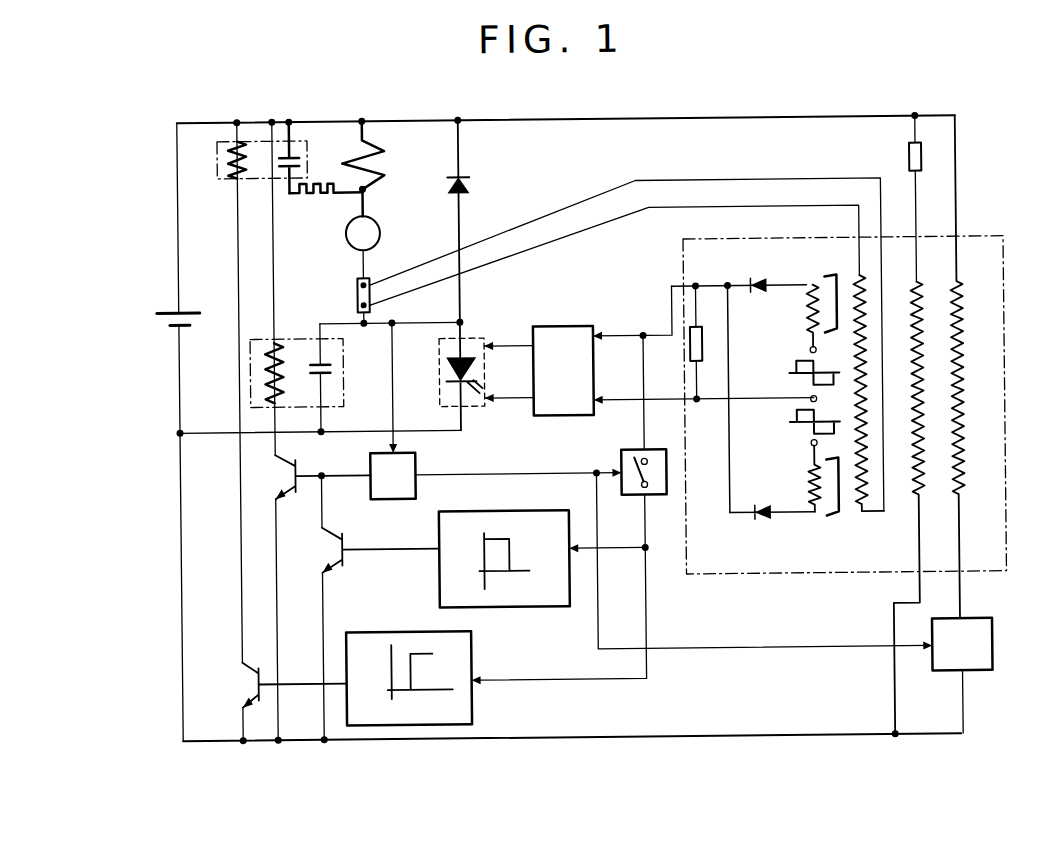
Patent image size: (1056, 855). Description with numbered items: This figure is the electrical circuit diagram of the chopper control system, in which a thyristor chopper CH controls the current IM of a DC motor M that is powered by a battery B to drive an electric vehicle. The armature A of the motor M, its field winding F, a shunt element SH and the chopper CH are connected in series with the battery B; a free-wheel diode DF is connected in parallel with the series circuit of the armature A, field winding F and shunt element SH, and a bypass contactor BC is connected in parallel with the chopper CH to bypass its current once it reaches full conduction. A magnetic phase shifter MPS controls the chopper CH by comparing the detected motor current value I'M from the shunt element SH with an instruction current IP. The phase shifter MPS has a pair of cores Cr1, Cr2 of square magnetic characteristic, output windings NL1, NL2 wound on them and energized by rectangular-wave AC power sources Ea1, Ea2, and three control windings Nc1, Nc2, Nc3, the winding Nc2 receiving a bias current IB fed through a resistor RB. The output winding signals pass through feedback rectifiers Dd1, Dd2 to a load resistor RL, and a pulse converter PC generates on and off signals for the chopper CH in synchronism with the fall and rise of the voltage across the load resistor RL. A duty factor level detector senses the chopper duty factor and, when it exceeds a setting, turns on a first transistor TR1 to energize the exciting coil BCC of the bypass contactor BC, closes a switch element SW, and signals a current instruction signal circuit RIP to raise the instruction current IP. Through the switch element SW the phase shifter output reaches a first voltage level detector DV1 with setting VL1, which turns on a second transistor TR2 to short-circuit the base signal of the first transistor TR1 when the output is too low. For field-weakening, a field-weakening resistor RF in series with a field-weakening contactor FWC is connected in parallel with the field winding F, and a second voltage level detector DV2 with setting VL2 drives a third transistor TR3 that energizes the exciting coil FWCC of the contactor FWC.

The battery B is at (176, 288).
The exciting coil for the field-weakening contactor FWCC is at (230, 152).
The field-weakening contactor FWC is at (303, 160).
The field-weakening resistor RF is at (325, 202).
The field winding F is at (359, 171).
The DC motor M is at (393, 197).
The armature A is at (363, 247).
The motor current IM is at (356, 273).
The shunt element SH is at (357, 291).
The detected motor current value I'M is at (626, 329).
The exciting coil for the bypass contactor BCC is at (284, 350).
The bypass contactor BC is at (333, 368).
The free-wheel diode DF is at (472, 184).
The thyristor chopper CH is at (474, 406).
The pulse converter PC is at (673, 350).
The switch element SW is at (621, 468).
The first transistor TR1 is at (294, 480).
The second transistor TR2 is at (339, 552).
The third transistor TR3 is at (254, 685).
The first voltage level detector DV1 is at (504, 545).
The second voltage level detector DV2 is at (409, 663).
The voltage level setting VL1 is at (491, 590).
The voltage level setting VL2 is at (399, 704).
The load resistor RL is at (691, 353).
The magnetic phase shifter MPS is at (1005, 240).
The feedback rectifier Dd1 is at (758, 279).
The feedback rectifier Dd2 is at (758, 521).
The output winding NL1 is at (810, 312).
The output winding NL2 is at (810, 493).
The AC power source Ea1 is at (797, 367).
The AC power source Ea2 is at (797, 416).
The core Cr1 is at (830, 278).
The core Cr2 is at (832, 519).
The control winding Nc3 is at (870, 518).
The control winding Nc1 is at (954, 500).
The control winding Nc2 is at (924, 500).
The bias resistor RB is at (912, 160).
The bias current IB is at (928, 222).
The instruction current IP is at (966, 222).
The current instruction signal circuit RIP is at (794, 603).